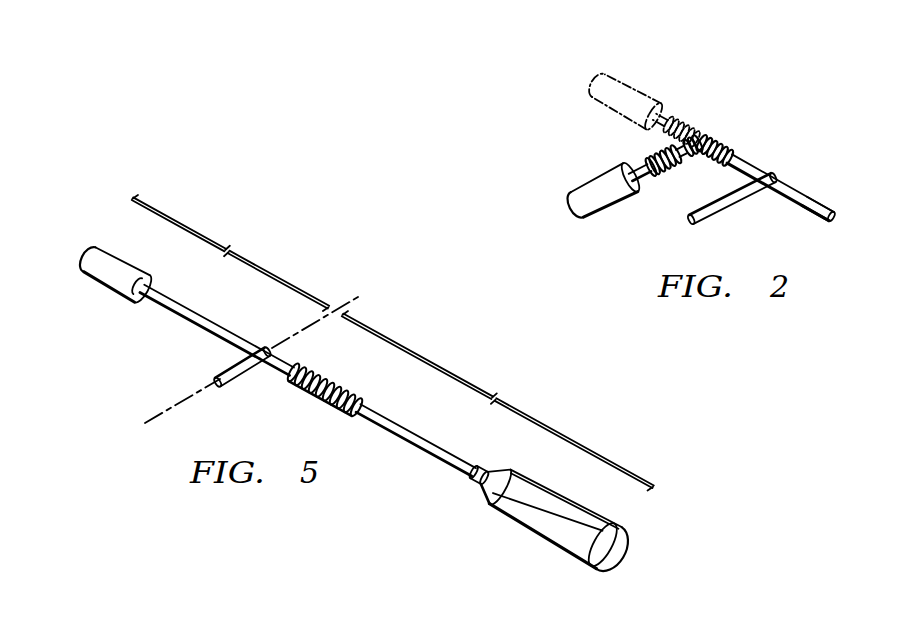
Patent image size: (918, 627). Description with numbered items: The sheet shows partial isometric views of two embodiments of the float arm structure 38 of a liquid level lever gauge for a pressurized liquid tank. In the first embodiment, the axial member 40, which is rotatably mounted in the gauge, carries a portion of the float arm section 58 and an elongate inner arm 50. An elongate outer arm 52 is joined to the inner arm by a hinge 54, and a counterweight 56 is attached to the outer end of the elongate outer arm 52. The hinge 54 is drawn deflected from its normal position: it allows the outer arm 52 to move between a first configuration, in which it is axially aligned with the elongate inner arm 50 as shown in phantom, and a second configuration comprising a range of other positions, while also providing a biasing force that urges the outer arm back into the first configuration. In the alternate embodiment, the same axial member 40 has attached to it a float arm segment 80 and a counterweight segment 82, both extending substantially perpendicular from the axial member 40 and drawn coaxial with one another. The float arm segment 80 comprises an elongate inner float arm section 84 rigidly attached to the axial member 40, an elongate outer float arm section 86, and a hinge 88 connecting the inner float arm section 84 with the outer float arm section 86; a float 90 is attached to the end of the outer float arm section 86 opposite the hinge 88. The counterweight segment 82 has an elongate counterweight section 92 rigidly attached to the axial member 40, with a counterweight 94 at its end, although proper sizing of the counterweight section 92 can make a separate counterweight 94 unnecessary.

In FIG. 2, the float arm structure 38 is at (712, 97).
In FIG. 5, the axial member 40 is at (221, 364).
In FIG. 2, the axial member 40 is at (729, 214).
In FIG. 2, the elongate inner arm 50 is at (753, 161).
In FIG. 2, the elongate outer arm 52 is at (640, 160).
In FIG. 2, the hinge 54 is at (733, 136).
In FIG. 2, the counterweight 56 is at (583, 181).
In FIG. 2, the float arm section 58 is at (820, 201).
In FIG. 5, the float arm segment 80 is at (498, 401).
In FIG. 5, the counterweight segment 82 is at (231, 252).
In FIG. 5, the elongate inner float arm section 84 is at (274, 371).
In FIG. 5, the elongate outer float arm section 86 is at (403, 446).
In FIG. 5, the hinge 88 is at (305, 400).
In FIG. 5, the float 90 is at (548, 543).
In FIG. 5, the elongate counterweight section 92 is at (168, 313).
In FIG. 5, the counterweight 94 is at (88, 252).